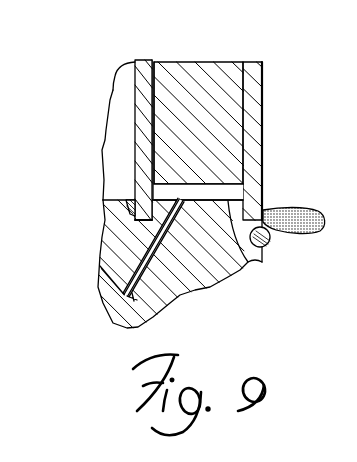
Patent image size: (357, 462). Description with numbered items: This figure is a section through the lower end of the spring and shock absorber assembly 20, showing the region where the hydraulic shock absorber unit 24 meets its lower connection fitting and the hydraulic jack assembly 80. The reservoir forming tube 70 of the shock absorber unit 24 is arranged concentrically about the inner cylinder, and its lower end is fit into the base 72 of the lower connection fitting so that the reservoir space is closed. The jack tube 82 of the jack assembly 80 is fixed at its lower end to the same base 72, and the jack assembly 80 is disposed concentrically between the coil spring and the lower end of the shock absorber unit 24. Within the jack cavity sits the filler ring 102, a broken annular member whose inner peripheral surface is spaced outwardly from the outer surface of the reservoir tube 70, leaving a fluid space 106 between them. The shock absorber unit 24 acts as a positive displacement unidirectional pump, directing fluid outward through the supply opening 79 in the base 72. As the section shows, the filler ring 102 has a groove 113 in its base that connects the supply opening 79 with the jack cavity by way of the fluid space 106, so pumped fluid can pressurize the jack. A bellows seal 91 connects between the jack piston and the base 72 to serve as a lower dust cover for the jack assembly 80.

The assembly 20 is at (100, 150).
The hydraulic shock absorber unit 24 is at (137, 80).
The reservoir forming tube 70 is at (143, 67).
The base 72 is at (245, 259).
The opening 79 is at (160, 266).
The hydraulic jack assembly 80 is at (262, 82).
The jack tube 82 is at (252, 132).
The bellows seal 91 is at (297, 235).
The filler ring 102 is at (204, 93).
The fluid space 106 is at (149, 116).
The groove 113 is at (222, 191).